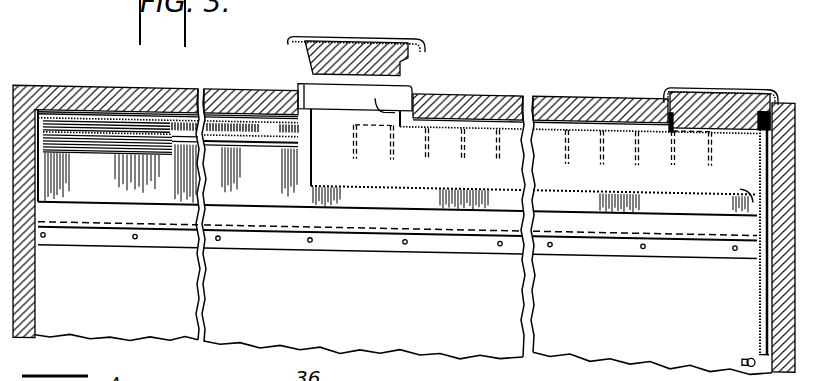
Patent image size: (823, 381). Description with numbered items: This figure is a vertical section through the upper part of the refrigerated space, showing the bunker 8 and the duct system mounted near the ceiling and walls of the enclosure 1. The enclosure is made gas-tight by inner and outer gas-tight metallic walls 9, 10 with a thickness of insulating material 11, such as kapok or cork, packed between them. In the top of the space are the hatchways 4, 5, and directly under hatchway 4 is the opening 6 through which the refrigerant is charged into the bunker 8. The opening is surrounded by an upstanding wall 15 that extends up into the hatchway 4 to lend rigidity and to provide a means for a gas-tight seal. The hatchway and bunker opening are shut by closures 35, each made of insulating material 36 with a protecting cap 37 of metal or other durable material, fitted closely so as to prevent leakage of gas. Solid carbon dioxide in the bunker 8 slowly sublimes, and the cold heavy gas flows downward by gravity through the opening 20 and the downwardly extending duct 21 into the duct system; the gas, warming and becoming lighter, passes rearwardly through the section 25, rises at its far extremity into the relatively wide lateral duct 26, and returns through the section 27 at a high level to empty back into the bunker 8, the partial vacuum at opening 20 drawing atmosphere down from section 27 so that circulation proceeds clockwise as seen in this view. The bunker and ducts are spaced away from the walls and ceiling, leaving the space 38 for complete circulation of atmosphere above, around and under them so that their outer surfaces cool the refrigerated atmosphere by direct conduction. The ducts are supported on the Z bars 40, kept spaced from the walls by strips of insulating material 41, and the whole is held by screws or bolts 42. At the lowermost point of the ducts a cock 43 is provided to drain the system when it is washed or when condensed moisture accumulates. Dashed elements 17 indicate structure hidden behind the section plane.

The casing wall 1 is at (30, 86).
The hatchway 4 is at (323, 84).
The hatchway 5 is at (652, 97).
The opening 6 is at (333, 104).
The bunker 8 is at (485, 118).
The inner gas-tight metallic wall 9 is at (160, 85).
The outer gas-tight metallic wall 10 is at (190, 109).
The insulating material 11 is at (240, 89).
The upstanding wall 15 is at (371, 99).
The dashed elements 17 is at (462, 135).
The opening 20 is at (753, 176).
The downwardly extending duct 21 is at (745, 289).
The duct section 25 is at (220, 140).
The lateral duct 26 is at (98, 150).
The return duct section 27 is at (268, 123).
The closure 35 is at (398, 32).
The insulating material 36 is at (409, 51).
The protecting cap 37 is at (298, 34).
The space 38 is at (77, 111).
The Z bar 40 is at (475, 238).
The strip of insulating material 41 is at (262, 225).
The screw or bolt 42 is at (403, 236).
The cock 43 is at (740, 348).